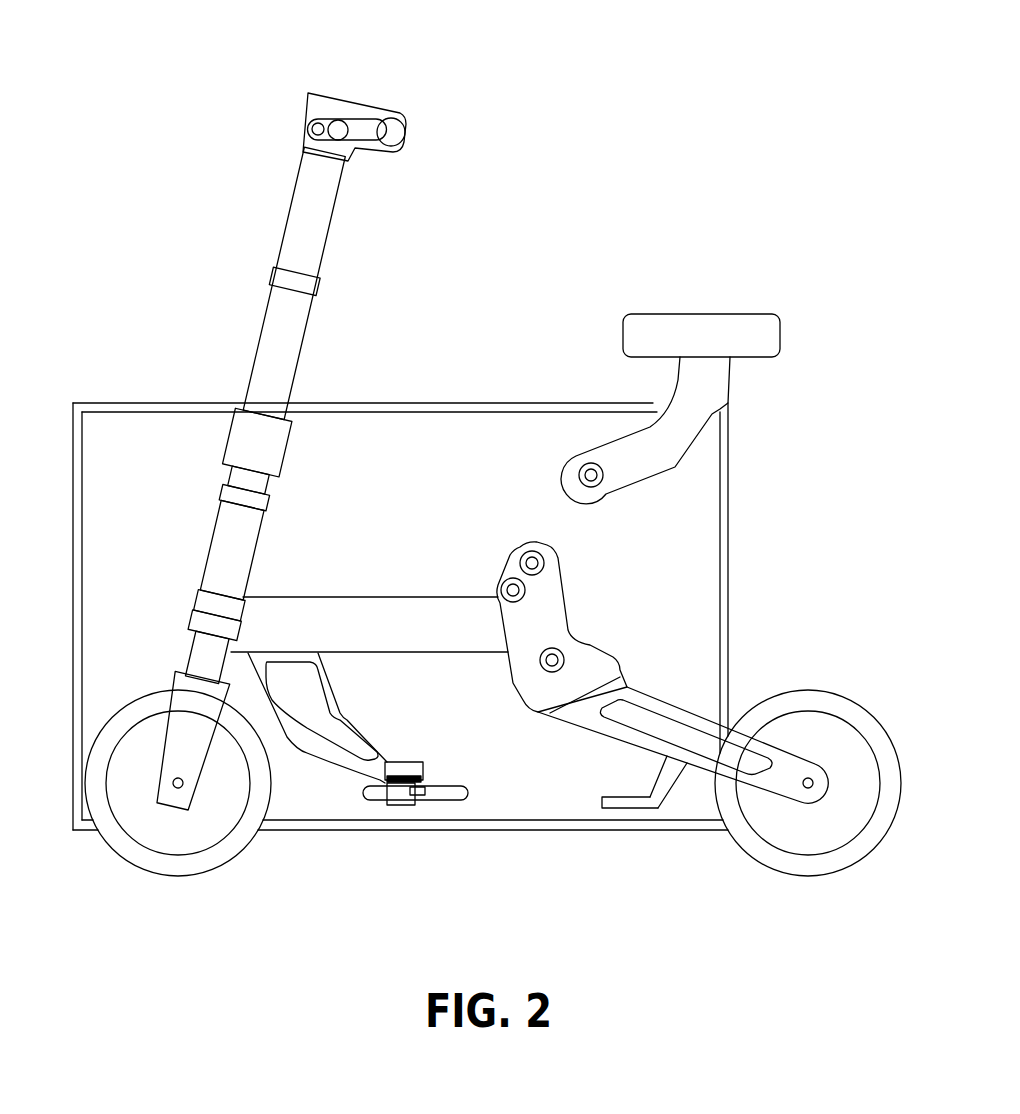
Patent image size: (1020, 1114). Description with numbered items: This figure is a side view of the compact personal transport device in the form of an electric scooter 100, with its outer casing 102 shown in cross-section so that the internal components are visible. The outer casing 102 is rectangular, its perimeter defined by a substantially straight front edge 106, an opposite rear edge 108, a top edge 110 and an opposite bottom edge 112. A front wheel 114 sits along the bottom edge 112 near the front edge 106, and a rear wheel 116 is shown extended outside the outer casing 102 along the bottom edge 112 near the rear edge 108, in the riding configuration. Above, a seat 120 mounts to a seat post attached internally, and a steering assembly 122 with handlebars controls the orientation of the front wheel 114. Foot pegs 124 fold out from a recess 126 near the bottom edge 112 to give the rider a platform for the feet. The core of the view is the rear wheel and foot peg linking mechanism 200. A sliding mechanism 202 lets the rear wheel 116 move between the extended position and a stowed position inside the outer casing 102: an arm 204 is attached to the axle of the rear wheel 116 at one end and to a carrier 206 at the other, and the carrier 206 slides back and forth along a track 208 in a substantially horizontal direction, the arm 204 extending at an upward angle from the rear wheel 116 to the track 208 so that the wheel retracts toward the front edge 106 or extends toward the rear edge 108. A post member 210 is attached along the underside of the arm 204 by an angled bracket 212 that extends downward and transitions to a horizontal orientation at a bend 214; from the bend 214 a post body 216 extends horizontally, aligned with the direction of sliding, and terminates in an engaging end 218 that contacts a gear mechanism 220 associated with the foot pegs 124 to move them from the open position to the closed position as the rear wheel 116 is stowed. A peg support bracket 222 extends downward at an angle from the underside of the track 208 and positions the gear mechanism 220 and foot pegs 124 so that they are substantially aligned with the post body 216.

The electric scooter 100 is at (588, 212).
The outer casing 102 is at (441, 611).
The front edge 106 is at (73, 497).
The rear edge 108 is at (729, 593).
The top edge 110 is at (447, 403).
The bottom edge 112 is at (455, 832).
The front wheel 114 is at (170, 876).
The rear wheel 116 is at (808, 876).
The seat 120 is at (703, 330).
The steering assembly 122 is at (353, 103).
The foot pegs 124 is at (425, 795).
The recess 126 is at (438, 778).
The rear wheel and foot peg linking mechanism 200 is at (660, 742).
The sliding mechanism 202 is at (335, 597).
The arm 204 is at (683, 710).
The carrier 206 is at (547, 610).
The track 208 is at (369, 584).
The post member 210 is at (627, 830).
The angled bracket 212 is at (675, 782).
The bend 214 is at (660, 797).
The post body 216 is at (610, 797).
The engaging end 218 is at (585, 795).
The gear mechanism 220 is at (427, 748).
The peg support bracket 222 is at (335, 703).